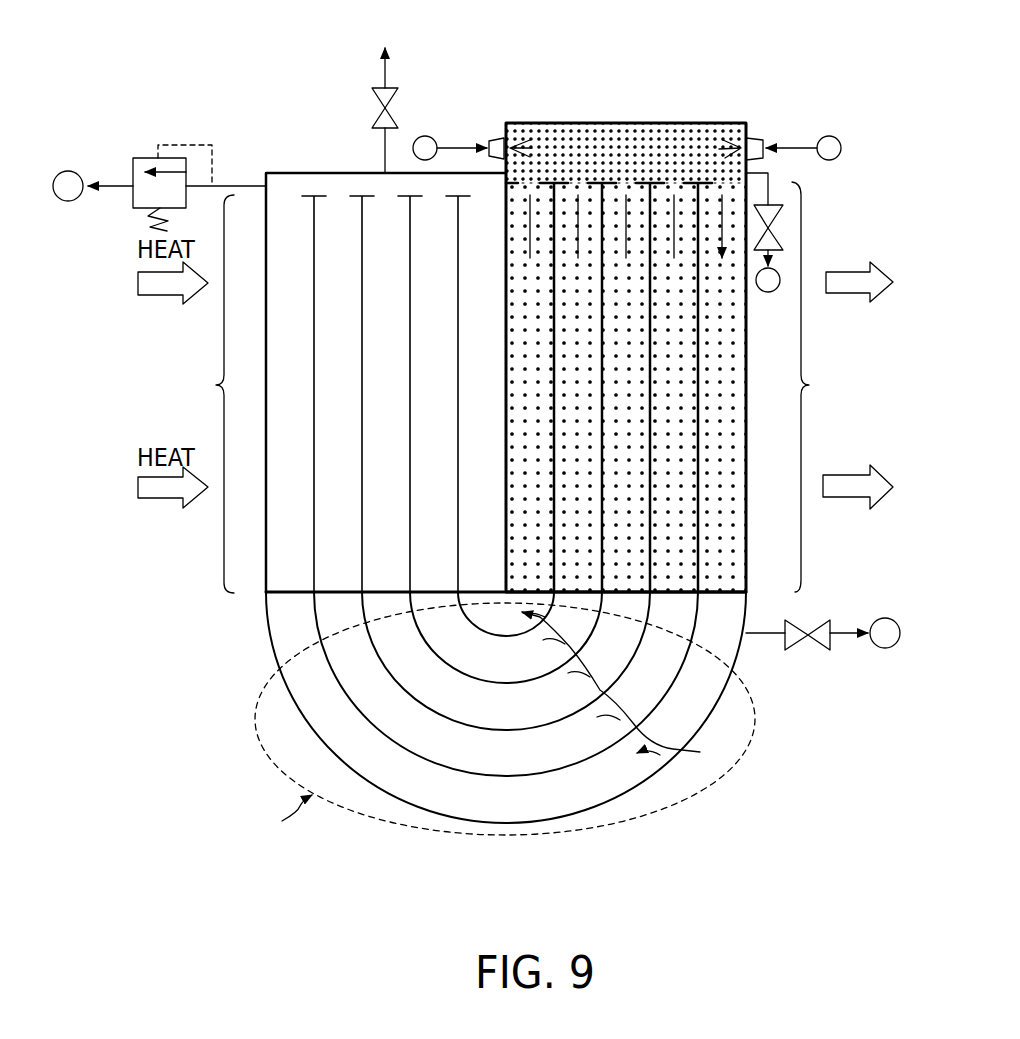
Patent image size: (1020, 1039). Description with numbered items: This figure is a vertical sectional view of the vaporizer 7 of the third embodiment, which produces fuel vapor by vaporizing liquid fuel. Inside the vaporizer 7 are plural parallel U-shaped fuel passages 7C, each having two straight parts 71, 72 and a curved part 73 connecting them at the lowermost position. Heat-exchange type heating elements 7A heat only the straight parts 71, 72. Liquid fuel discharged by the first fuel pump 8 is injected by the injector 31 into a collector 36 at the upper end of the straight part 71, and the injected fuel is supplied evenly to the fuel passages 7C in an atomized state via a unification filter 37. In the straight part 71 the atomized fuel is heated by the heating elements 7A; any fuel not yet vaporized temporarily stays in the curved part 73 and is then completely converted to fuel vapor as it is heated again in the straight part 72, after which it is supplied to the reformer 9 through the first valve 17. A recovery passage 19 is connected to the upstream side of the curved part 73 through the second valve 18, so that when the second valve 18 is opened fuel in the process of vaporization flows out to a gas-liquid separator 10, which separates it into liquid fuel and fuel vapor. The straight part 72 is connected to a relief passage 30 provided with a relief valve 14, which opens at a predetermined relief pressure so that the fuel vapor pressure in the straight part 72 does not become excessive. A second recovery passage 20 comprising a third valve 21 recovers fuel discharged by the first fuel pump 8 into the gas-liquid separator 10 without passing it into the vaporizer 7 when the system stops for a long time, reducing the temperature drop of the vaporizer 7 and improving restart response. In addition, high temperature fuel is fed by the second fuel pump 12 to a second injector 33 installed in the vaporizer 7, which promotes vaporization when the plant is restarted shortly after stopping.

The vaporizer 7 is at (634, 790).
The heating elements 7A is at (262, 566).
The fuel passages 7C is at (628, 689).
The first fuel pump 8 is at (822, 133).
The reformer 9 is at (391, 51).
The gas-liquid separator 10 is at (67, 170).
The second fuel pump 12 is at (422, 134).
The relief valve 14 is at (128, 206).
The first valve 17 is at (372, 97).
The second valve 18 is at (798, 622).
The recovery passage 19 is at (847, 630).
The second recovery passage 20 is at (772, 176).
The third valve 21 is at (785, 238).
The relief passage 30 is at (236, 184).
The injector 31 is at (750, 138).
The second injector 33 is at (492, 138).
The collector 36 is at (663, 133).
The unification filter 37 is at (655, 180).
The straight part 71 is at (740, 542).
The straight part 72 is at (282, 510).
The curved part 73 is at (504, 808).